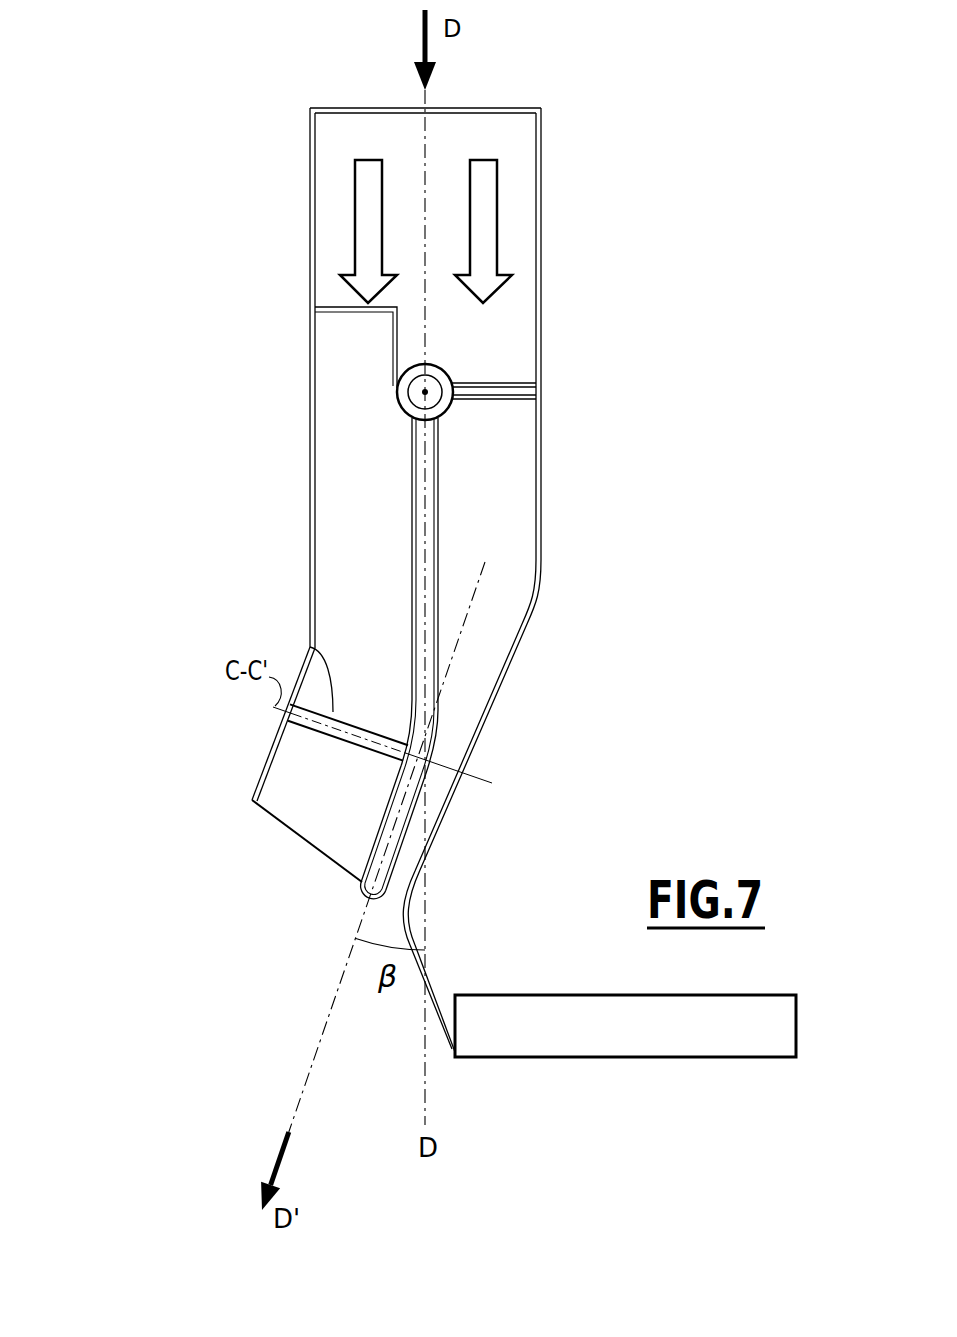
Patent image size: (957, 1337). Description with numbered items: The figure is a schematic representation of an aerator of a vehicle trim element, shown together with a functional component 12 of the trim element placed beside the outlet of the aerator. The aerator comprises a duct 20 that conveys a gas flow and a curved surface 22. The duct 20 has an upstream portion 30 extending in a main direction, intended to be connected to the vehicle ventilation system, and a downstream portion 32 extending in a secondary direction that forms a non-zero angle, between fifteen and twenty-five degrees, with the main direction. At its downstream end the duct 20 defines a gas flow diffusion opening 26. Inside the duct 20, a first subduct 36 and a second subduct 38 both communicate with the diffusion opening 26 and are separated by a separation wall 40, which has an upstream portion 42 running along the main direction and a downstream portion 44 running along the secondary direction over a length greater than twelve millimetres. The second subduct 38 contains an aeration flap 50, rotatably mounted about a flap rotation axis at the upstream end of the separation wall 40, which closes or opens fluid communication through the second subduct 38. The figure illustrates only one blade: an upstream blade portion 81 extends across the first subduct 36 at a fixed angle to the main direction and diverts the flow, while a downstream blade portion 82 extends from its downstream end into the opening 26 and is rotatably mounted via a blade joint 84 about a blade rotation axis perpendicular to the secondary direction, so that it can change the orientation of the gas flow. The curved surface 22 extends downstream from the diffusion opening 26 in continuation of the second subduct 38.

The functional component 12 is at (628, 1030).
The duct 20 is at (295, 245).
The curved surface 22 is at (445, 1047).
The gas flow diffusion opening 26 is at (243, 863).
The upstream portion 30 is at (548, 418).
The downstream portion 32 is at (258, 727).
The first subduct 36 is at (338, 427).
The second subduct 38 is at (508, 467).
The separation wall 40 is at (460, 502).
The upstream portion of separation wall 42 is at (438, 467).
The downstream portion of separation wall 44 is at (410, 799).
The aeration flap 50 is at (496, 392).
The upstream blade portion 81 is at (342, 473).
The downstream blade portion 82 is at (307, 783).
The blade joint 84 is at (311, 647).